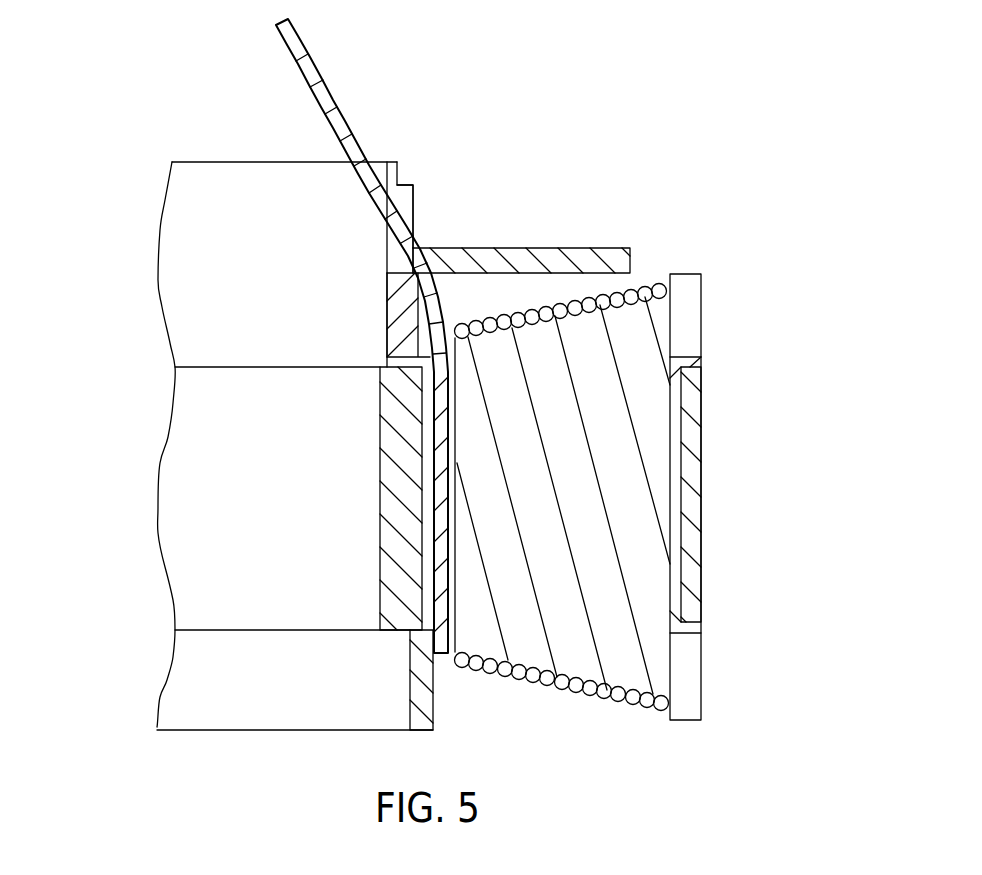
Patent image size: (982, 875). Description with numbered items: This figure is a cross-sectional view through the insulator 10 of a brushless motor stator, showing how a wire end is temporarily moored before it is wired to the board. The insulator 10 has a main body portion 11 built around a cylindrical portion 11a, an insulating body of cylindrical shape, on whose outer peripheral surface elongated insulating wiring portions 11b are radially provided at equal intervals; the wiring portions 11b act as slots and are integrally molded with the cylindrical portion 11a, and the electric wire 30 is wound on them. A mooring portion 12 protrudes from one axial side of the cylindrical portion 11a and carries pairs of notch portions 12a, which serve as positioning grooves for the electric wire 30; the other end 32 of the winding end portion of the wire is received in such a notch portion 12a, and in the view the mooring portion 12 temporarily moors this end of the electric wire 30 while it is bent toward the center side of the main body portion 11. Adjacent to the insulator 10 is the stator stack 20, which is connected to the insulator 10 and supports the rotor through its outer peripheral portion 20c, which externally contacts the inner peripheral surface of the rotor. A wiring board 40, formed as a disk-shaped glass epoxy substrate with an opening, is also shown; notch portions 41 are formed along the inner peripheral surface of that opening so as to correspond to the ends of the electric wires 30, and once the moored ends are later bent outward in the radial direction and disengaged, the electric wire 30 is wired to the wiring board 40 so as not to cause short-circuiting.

The insulator 10 is at (490, 97).
The main body portion 11 is at (155, 297).
The cylindrical portion 11a is at (202, 510).
The wiring portion 11b is at (500, 578).
The mooring portion 12 is at (397, 162).
The notch portion 12a is at (413, 200).
The stator stack 20 is at (781, 401).
The outer peripheral portion 20c is at (688, 312).
The electric wire 30 is at (656, 263).
The other end of winding end portion 32 is at (336, 110).
The wiring board 40 is at (524, 224).
The notch portion 41 is at (440, 248).